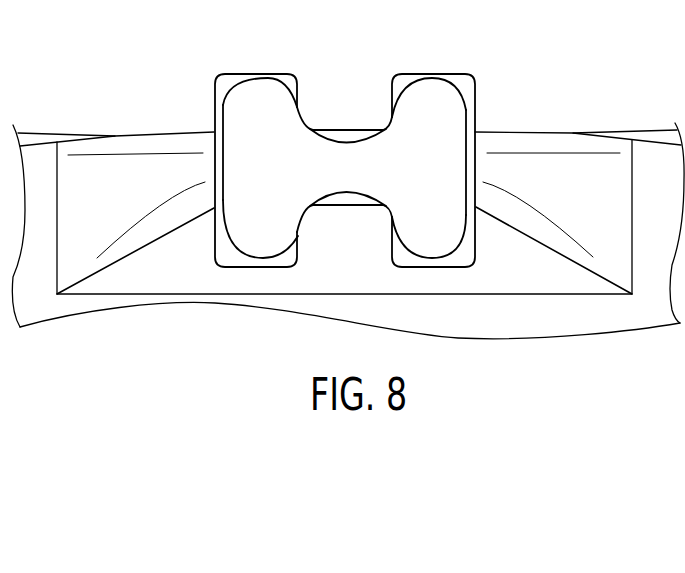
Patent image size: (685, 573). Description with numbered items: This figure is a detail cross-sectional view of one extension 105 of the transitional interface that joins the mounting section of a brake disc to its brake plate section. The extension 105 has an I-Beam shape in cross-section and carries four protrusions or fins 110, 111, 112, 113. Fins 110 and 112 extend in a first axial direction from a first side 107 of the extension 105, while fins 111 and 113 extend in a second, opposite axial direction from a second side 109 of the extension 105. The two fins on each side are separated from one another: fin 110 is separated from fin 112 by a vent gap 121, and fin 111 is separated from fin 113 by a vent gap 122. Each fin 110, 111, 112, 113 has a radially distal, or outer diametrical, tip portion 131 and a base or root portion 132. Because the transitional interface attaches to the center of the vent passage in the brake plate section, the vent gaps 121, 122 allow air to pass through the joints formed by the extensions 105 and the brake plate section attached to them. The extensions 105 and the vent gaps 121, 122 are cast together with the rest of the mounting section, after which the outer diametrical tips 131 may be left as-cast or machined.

The extension 105 is at (245, 74).
The first side 107 is at (353, 132).
The second side 109 is at (356, 207).
The fin 110 is at (432, 95).
The fin 111 is at (450, 238).
The fin 112 is at (245, 117).
The fin 113 is at (252, 243).
The vent gap 121 is at (332, 106).
The vent gap 122 is at (336, 229).
The outer diametrical tip portion 131 is at (259, 95).
The root portion 132 is at (476, 108).